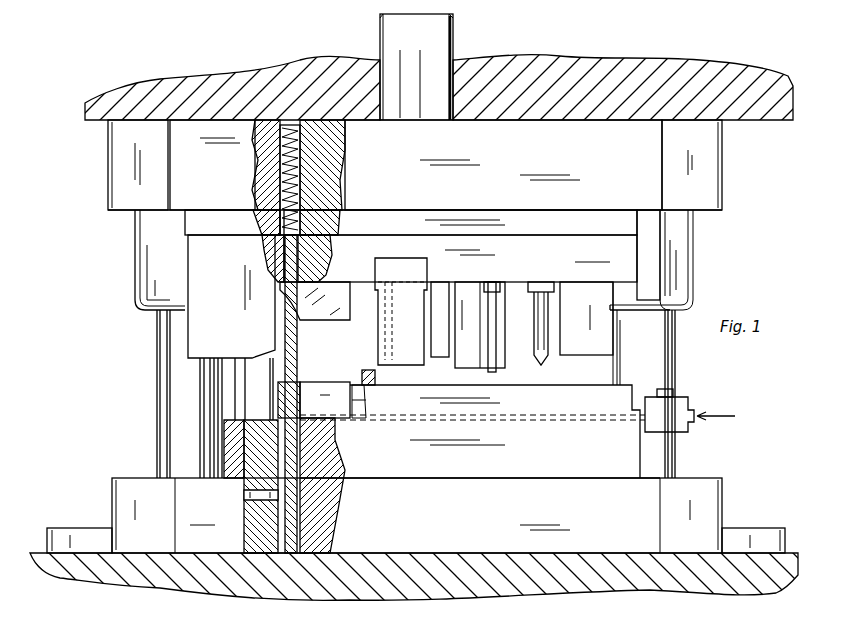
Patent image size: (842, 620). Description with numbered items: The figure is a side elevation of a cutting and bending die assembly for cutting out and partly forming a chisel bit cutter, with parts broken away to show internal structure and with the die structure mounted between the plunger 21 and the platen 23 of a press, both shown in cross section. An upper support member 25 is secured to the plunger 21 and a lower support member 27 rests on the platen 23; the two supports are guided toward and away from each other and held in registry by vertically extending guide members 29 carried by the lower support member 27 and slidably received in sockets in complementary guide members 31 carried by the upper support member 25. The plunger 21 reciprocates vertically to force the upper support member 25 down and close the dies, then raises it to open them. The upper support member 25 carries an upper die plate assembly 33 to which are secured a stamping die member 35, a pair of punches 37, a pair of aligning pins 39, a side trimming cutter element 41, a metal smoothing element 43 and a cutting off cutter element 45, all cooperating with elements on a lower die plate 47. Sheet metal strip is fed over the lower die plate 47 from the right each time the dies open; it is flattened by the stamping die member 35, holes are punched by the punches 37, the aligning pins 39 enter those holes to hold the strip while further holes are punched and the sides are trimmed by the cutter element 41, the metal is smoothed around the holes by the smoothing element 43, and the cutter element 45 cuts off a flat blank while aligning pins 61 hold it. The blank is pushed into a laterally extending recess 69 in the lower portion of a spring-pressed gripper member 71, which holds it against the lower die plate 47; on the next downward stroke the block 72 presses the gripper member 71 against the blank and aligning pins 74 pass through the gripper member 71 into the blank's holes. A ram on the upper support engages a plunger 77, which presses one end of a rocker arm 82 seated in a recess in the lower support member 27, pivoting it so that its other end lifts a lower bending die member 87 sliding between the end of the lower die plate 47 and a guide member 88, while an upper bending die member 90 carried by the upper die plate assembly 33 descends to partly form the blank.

The plunger 21 is at (162, 78).
The platen 23 is at (156, 588).
The upper support member 25 is at (118, 153).
The lower support member 27 is at (440, 535).
The guide members 29 is at (168, 352).
The complementary guide members 31 is at (148, 278).
The upper die plate assembly 33 is at (630, 259).
The stamping die member 35 is at (590, 355).
The punches 37 is at (538, 350).
The aligning pins 39 is at (491, 340).
The side trimming cutter element 41 is at (496, 352).
The metal smoothing element 43 is at (440, 352).
The cutting off cutter element 45 is at (412, 355).
The lower die plate 47 is at (338, 478).
The aligning pins 61 is at (378, 345).
The laterally extending recess 69 is at (317, 398).
The gripper member 71 is at (333, 385).
The block 72 is at (338, 315).
The aligning pins 74 is at (299, 362).
The plunger 77 is at (258, 373).
The rocker arm 82 is at (255, 510).
The lower bending die member 87 is at (252, 435).
The guide member 88 is at (230, 455).
The upper bending die member 90 is at (232, 347).